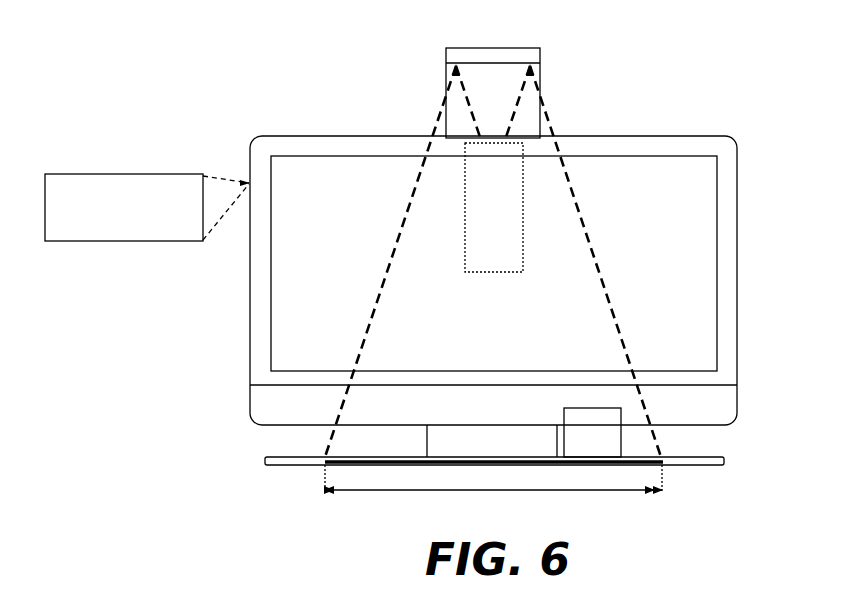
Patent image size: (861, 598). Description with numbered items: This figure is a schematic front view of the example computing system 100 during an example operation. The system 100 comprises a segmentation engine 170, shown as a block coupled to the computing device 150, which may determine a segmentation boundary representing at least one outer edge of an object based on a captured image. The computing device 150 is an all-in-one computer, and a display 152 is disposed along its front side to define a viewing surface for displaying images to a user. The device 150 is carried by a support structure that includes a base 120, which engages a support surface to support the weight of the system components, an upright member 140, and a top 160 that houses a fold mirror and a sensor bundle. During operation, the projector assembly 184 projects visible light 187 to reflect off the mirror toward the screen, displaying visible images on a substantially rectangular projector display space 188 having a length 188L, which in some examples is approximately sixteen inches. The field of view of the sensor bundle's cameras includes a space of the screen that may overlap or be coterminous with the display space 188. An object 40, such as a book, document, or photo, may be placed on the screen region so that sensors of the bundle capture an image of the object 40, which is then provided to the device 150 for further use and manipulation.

The computing system 100 is at (664, 88).
The computing device 150 is at (740, 192).
The display 152 is at (331, 197).
The top 160 is at (542, 43).
The upright member 140 is at (545, 97).
The visible light 187 is at (440, 118).
The projector assembly 184 is at (464, 209).
The segmentation engine 170 is at (120, 243).
The base 120 is at (263, 455).
The projector display space 188 is at (367, 455).
The length 188L is at (493, 494).
The object 40 is at (607, 405).